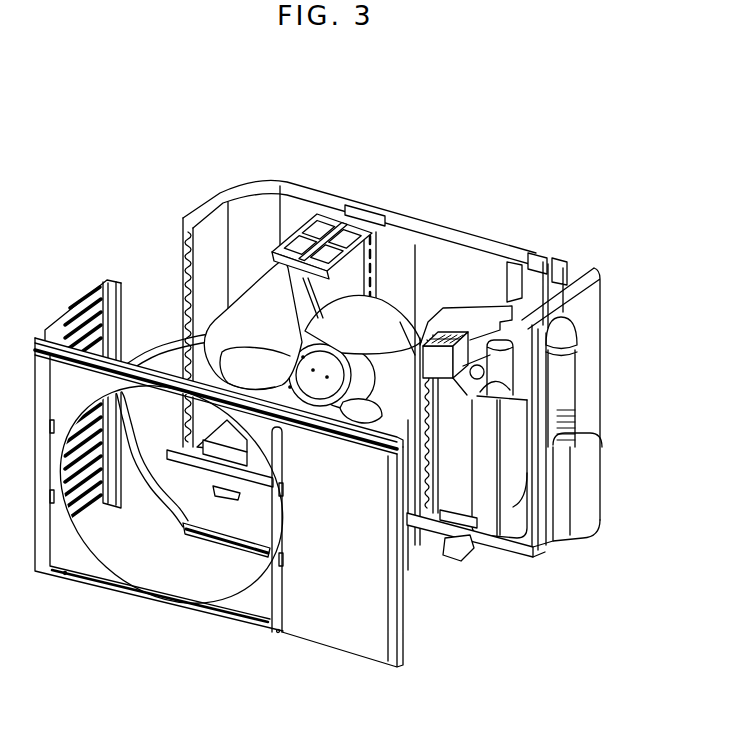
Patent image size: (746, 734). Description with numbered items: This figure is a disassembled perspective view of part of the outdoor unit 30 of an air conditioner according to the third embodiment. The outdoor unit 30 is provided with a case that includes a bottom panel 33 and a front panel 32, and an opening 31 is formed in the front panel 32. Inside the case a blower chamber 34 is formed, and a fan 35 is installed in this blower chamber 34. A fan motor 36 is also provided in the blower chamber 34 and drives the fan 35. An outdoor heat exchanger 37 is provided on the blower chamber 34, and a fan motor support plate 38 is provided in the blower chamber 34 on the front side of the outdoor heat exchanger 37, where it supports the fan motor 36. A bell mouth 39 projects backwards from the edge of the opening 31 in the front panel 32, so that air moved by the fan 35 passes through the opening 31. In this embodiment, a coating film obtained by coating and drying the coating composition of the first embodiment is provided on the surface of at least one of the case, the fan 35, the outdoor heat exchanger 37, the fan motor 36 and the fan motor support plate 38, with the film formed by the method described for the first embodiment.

The outdoor unit 30 is at (594, 228).
The opening 31 is at (233, 582).
The front panel 32 is at (403, 580).
The bottom panel 33 is at (408, 527).
The blower chamber 34 is at (470, 548).
The fan 35 is at (253, 296).
The fan motor 36 is at (373, 360).
The outdoor heat exchanger 37 is at (197, 207).
The fan motor support plate 38 is at (372, 222).
The bell mouth 39 is at (160, 493).